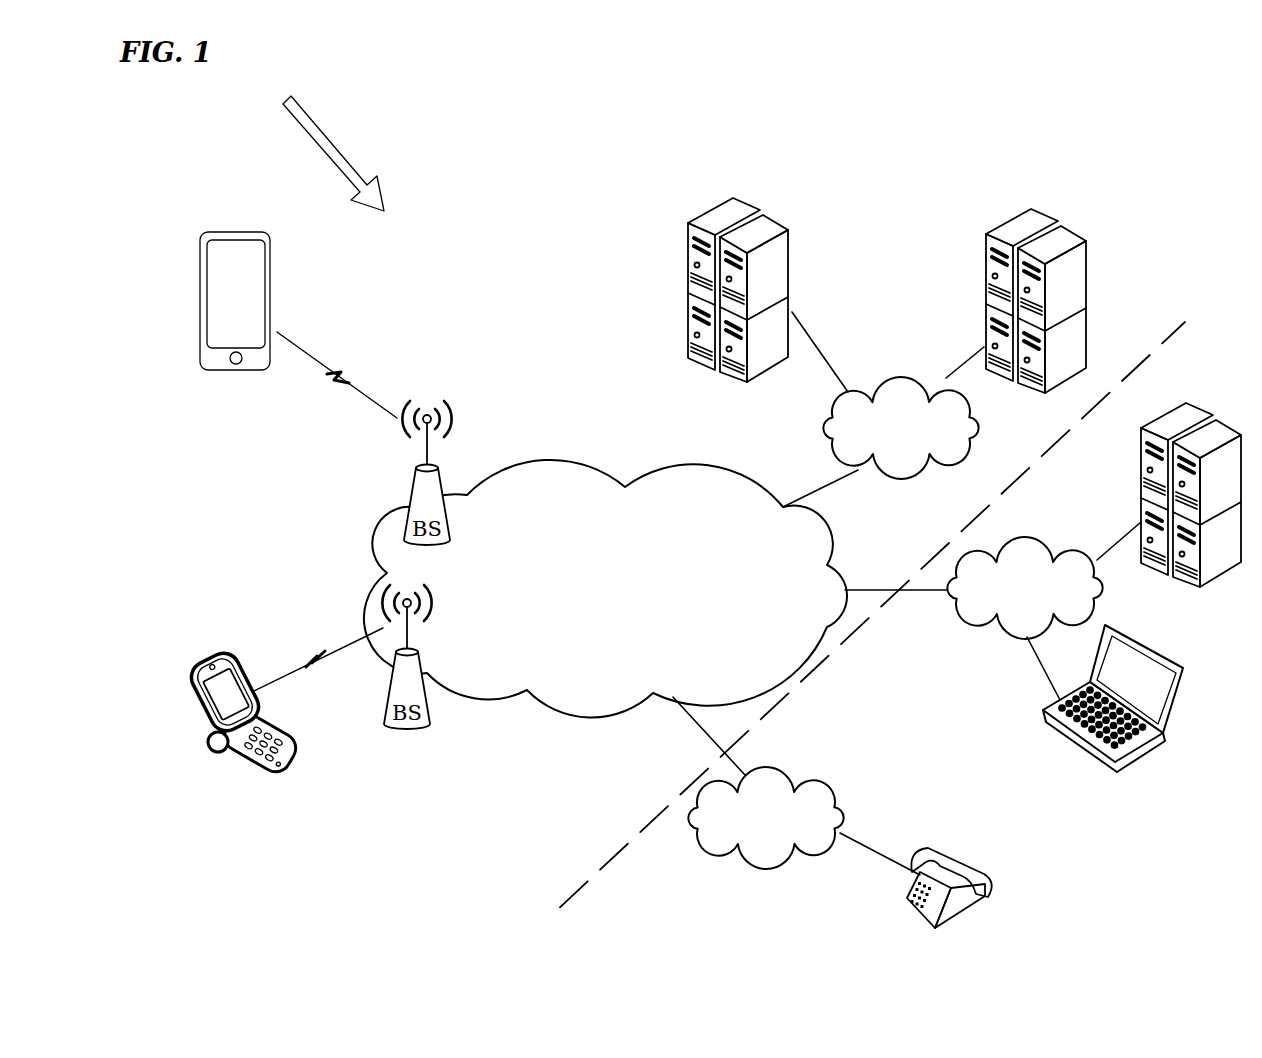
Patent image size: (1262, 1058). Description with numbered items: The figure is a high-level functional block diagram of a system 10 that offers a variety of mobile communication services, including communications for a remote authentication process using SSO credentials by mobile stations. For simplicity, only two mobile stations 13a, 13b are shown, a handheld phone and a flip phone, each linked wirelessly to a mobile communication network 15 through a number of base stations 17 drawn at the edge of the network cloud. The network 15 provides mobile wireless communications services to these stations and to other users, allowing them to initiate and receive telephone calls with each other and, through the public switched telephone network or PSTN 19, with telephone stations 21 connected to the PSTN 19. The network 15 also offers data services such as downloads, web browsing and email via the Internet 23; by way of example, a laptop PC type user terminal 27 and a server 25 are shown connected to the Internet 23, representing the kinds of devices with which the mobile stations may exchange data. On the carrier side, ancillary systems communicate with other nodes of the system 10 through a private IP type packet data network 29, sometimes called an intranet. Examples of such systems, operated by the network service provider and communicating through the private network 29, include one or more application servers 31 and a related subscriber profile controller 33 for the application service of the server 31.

The system 10 is at (321, 145).
The mobile station 13a is at (200, 278).
The mobile station 13b is at (178, 690).
The mobile communication network 15 is at (510, 467).
The base station 17 is at (410, 489).
The public switched telephone network (PSTN) 19 is at (845, 800).
The telephone station 21 is at (905, 908).
The Internet 23 is at (957, 637).
The server 25 is at (1140, 498).
The laptop PC type user terminal 27 is at (1075, 746).
The private IP type packet data network 29 is at (980, 442).
The application server 31 is at (792, 243).
The subscriber profile controller 33 is at (1088, 300).